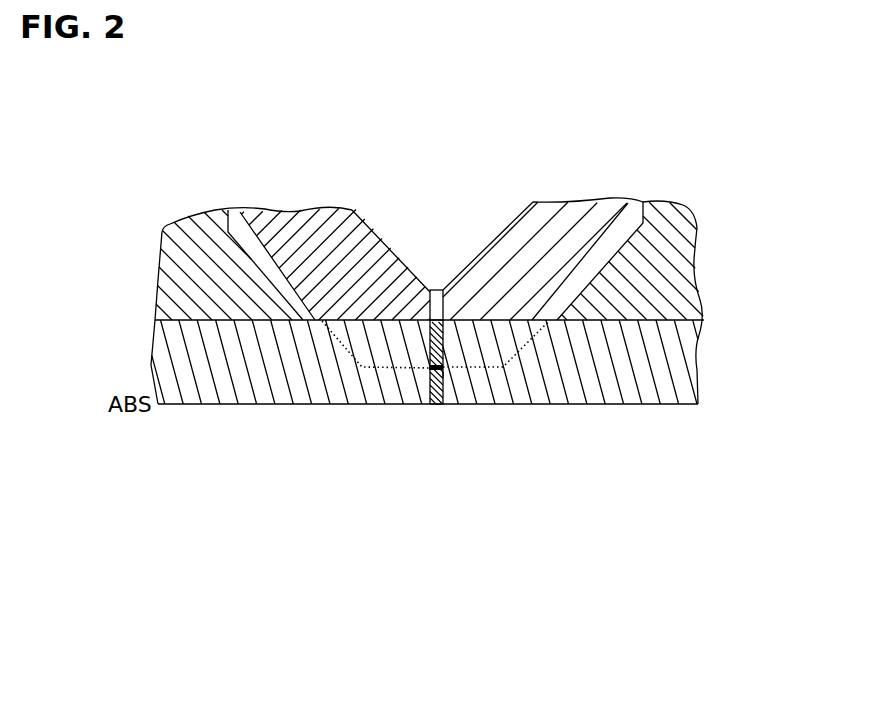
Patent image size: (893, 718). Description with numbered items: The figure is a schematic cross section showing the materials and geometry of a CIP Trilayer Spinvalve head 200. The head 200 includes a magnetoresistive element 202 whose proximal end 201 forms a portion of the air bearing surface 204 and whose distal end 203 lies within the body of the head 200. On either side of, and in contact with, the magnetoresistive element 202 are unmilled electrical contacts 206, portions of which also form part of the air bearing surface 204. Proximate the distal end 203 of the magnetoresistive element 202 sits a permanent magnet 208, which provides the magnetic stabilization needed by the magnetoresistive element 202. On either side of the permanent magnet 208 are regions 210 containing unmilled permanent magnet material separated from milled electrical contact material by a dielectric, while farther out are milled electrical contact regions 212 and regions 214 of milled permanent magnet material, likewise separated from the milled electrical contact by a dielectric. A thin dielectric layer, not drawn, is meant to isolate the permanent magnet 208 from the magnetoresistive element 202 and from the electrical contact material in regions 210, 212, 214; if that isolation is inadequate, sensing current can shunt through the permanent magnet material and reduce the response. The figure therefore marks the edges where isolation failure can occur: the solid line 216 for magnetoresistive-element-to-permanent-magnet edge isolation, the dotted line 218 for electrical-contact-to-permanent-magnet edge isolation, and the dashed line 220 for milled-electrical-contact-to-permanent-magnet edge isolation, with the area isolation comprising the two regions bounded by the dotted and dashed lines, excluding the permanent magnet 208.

The CIP Trilayer Spinvalve head 200 is at (504, 100).
The proximal end 201 is at (441, 422).
The magnetoresistive element 202 is at (444, 386).
The distal end 203 is at (462, 378).
The air bearing surface 204 is at (195, 405).
The unmilled electrical contacts 206 is at (190, 347).
The permanent magnet 208 is at (437, 333).
The unmilled permanent magnet regions 210 is at (373, 322).
The milled electrical contact regions 212 is at (167, 263).
The milled permanent magnet regions 214 is at (262, 218).
The MRE-to-PM edge-isolation line 216 is at (436, 369).
The EC-to-PM edge-isolation line 218 is at (662, 345).
The milled EC-to-PM edge-isolation line 220 is at (352, 320).